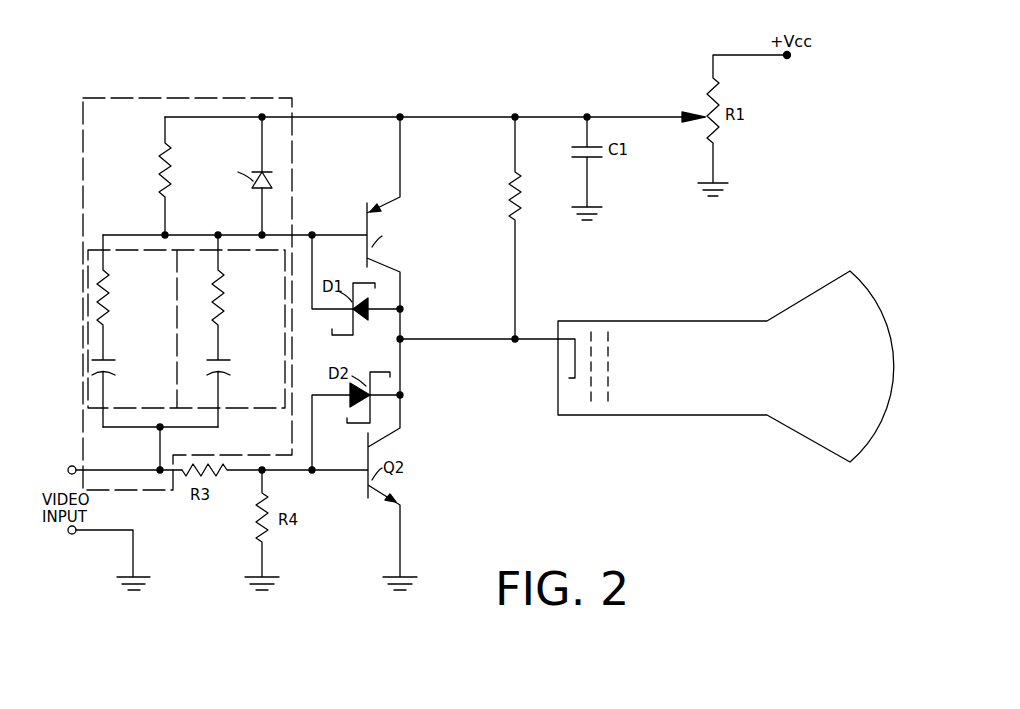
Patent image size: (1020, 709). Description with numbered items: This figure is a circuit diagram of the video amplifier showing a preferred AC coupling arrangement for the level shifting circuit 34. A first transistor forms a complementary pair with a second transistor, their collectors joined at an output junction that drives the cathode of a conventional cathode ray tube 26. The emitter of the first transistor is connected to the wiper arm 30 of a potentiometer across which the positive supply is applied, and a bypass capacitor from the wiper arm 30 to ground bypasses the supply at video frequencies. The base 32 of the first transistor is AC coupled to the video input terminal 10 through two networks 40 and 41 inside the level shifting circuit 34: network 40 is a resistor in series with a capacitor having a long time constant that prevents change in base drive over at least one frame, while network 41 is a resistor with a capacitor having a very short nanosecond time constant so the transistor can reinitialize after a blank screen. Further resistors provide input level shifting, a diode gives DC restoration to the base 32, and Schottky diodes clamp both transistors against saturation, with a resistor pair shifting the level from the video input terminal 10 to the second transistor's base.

The video input terminal 10 is at (74, 462).
The cathode ray tube 26 is at (865, 435).
The wiper arm 30 is at (683, 90).
The base 32 is at (363, 223).
The level shifting circuit 34 is at (176, 294).
The network 40 is at (167, 338).
The network 41 is at (90, 418).